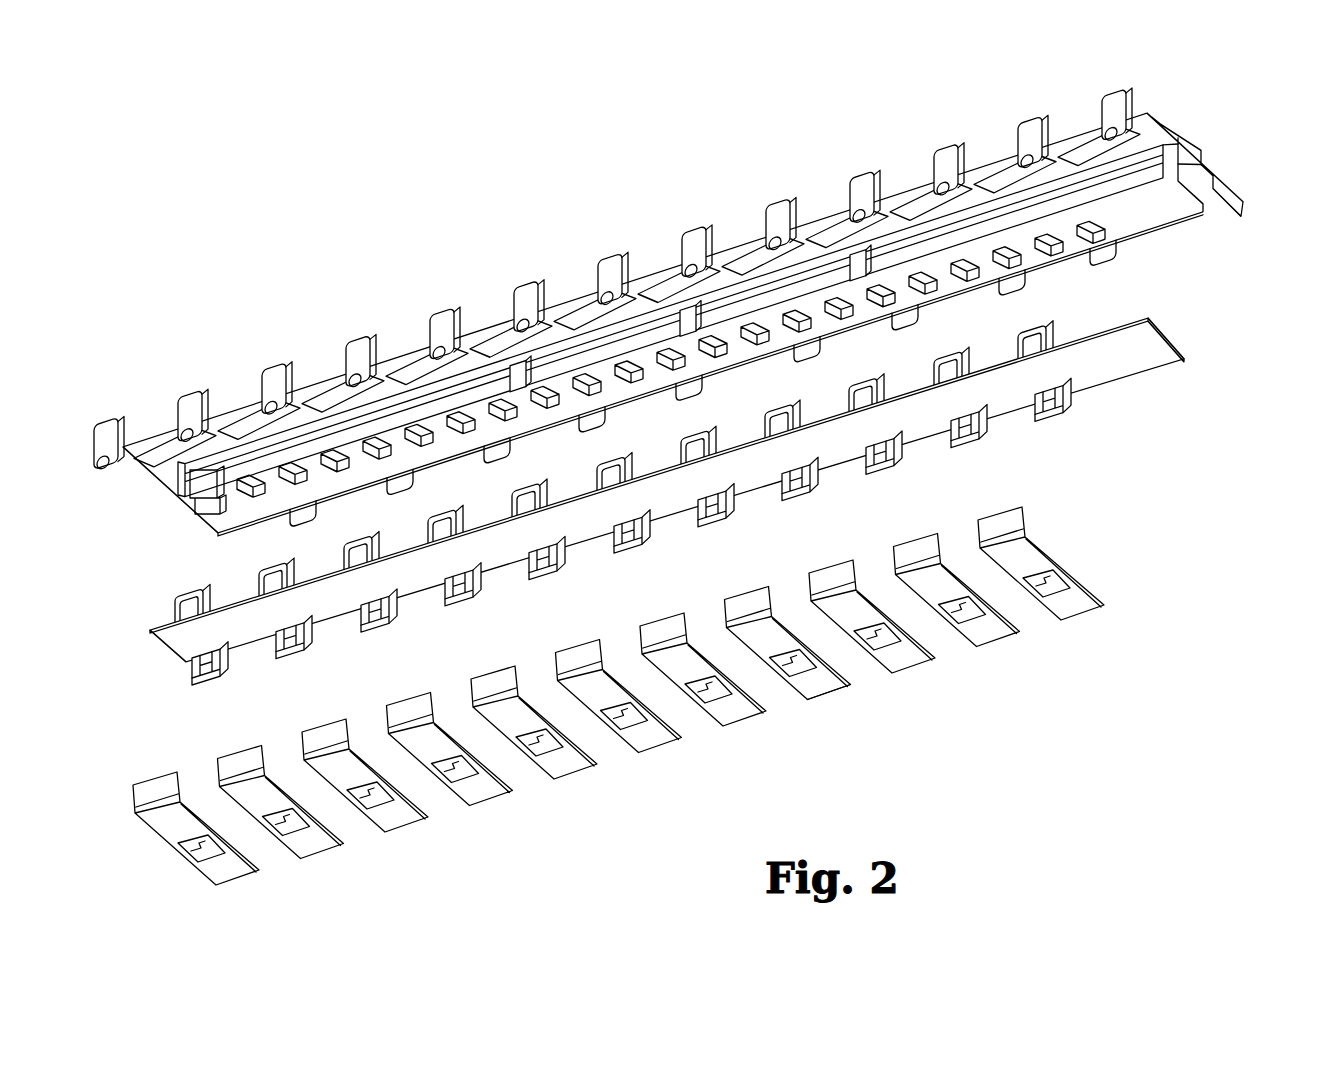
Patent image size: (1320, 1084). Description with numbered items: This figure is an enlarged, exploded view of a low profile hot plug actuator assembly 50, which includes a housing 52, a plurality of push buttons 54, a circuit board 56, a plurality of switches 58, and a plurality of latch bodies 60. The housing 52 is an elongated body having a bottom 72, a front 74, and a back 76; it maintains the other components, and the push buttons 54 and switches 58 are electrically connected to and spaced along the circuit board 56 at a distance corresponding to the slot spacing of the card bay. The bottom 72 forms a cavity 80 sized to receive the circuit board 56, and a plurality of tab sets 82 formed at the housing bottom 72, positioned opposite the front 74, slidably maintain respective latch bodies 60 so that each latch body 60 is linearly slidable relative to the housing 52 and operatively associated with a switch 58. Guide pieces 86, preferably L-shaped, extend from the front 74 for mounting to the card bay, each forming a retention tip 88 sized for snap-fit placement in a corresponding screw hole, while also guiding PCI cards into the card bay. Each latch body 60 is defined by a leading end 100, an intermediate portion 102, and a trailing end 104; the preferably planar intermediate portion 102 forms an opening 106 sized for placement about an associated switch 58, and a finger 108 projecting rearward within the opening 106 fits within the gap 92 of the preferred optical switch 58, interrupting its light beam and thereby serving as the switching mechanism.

The hot plug actuator assembly 50 is at (553, 154).
The housing 52 is at (685, 321).
The push buttons 54 is at (614, 474).
The circuit board 56 is at (701, 489).
The switches 58 is at (631, 531).
The latch bodies 60 is at (618, 696).
The bottom 72 is at (1182, 154).
The front 74 is at (670, 320).
The back 76 is at (683, 332).
The cavity 80 is at (208, 490).
The tab sets 82 is at (671, 359).
The guide pieces 86 is at (613, 279).
The retention tip 88 is at (637, 296).
The gap 92 is at (800, 478).
The leading end 100 is at (748, 607).
The intermediate portion 102 is at (789, 658).
The trailing end 104 is at (829, 692).
The opening 106 is at (810, 653).
The finger 108 is at (793, 663).